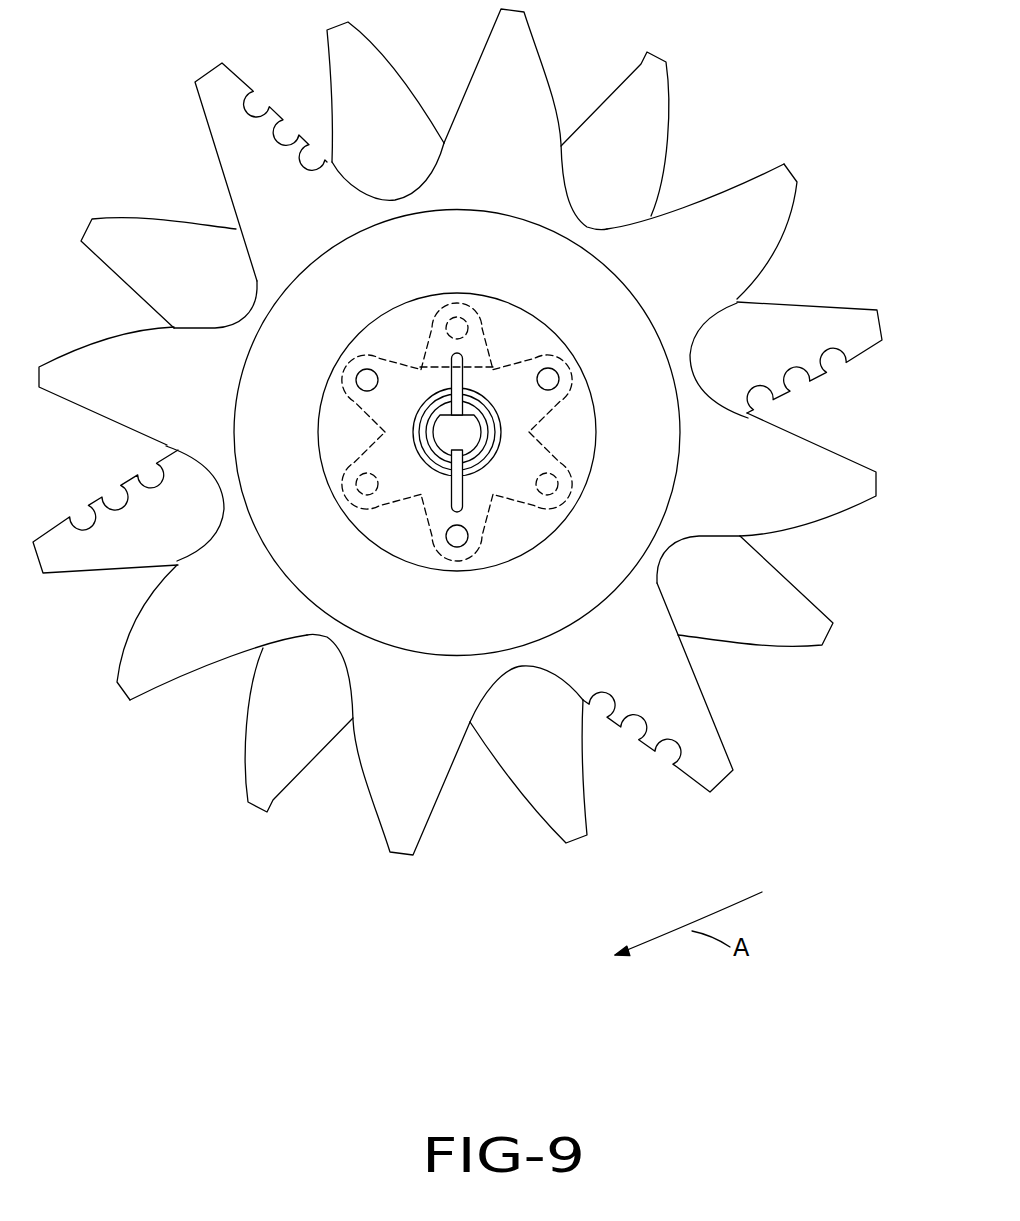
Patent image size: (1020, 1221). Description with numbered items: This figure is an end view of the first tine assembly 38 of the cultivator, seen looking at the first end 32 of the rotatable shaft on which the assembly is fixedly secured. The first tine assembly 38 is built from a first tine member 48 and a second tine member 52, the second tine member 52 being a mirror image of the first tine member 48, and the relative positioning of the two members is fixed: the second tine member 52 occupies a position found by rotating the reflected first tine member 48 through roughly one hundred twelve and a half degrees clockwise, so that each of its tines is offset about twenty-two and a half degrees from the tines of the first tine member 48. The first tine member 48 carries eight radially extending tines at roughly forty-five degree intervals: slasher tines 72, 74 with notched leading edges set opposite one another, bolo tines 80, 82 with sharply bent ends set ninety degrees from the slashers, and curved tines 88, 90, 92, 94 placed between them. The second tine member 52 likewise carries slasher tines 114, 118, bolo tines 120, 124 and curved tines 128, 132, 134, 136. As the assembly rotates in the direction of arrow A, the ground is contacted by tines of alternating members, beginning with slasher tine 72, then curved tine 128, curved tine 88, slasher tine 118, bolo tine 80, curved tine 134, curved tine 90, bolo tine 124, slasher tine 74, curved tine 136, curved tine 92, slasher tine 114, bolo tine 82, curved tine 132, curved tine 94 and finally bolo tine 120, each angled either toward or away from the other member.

The first end 32 is at (474, 433).
The first tine assembly 38 is at (192, 780).
The first tine member 48 is at (707, 430).
The second tine member 52 is at (627, 185).
The slasher tine 72 is at (675, 722).
The slasher tine 74 is at (223, 115).
The bolo tine 80 is at (780, 197).
The bolo tine 82 is at (185, 648).
The curved tine 88 is at (817, 470).
The curved tine 90 is at (520, 46).
The curved tine 92 is at (103, 400).
The curved tine 94 is at (412, 803).
The slasher tine 114 is at (117, 548).
The slasher tine 118 is at (832, 323).
The bolo tine 120 is at (565, 797).
The bolo tine 124 is at (360, 50).
The curved tine 128 is at (768, 605).
The curved tine 132 is at (267, 785).
The curved tine 134 is at (647, 88).
The curved tine 136 is at (127, 248).